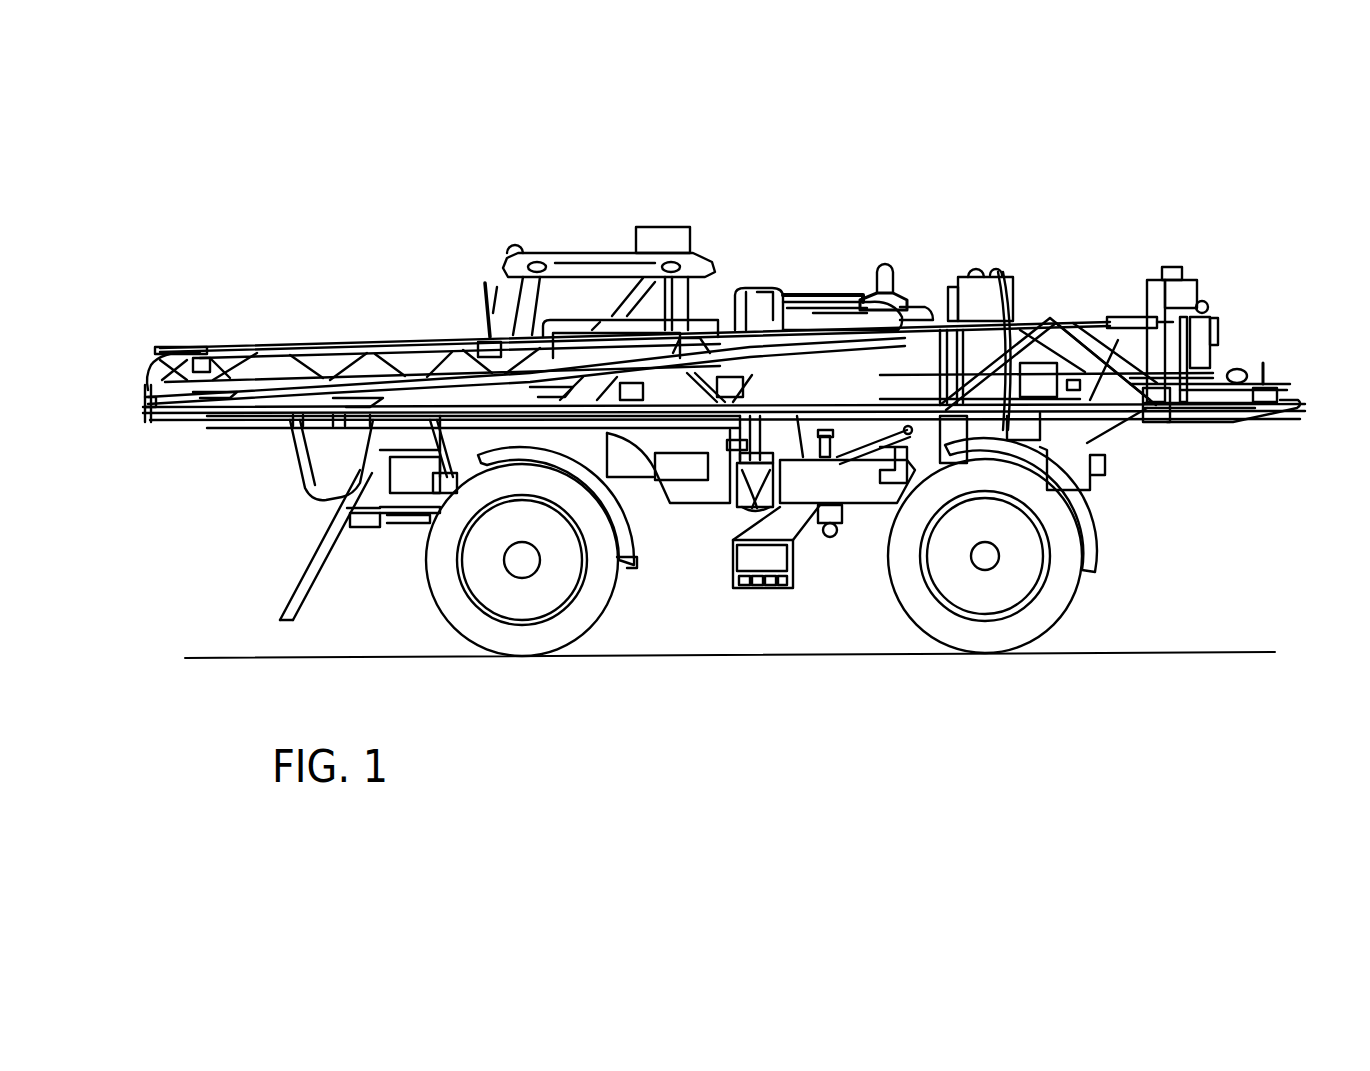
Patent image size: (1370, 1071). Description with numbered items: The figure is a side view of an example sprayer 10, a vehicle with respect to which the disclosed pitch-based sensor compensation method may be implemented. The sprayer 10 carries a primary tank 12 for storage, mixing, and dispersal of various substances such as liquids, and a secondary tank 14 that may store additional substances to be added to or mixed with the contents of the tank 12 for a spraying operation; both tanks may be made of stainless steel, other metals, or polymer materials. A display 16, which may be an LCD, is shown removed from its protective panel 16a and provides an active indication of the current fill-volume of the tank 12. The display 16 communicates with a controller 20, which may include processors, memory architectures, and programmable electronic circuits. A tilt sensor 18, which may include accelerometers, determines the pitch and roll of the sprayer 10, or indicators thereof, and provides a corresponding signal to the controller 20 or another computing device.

The sprayer 10 is at (271, 179).
The tank 12 is at (830, 292).
The tank 14 is at (971, 262).
The display 16 is at (762, 588).
The protective panel 16a is at (833, 493).
The tilt sensor 18 is at (661, 227).
The controller 20 is at (683, 480).